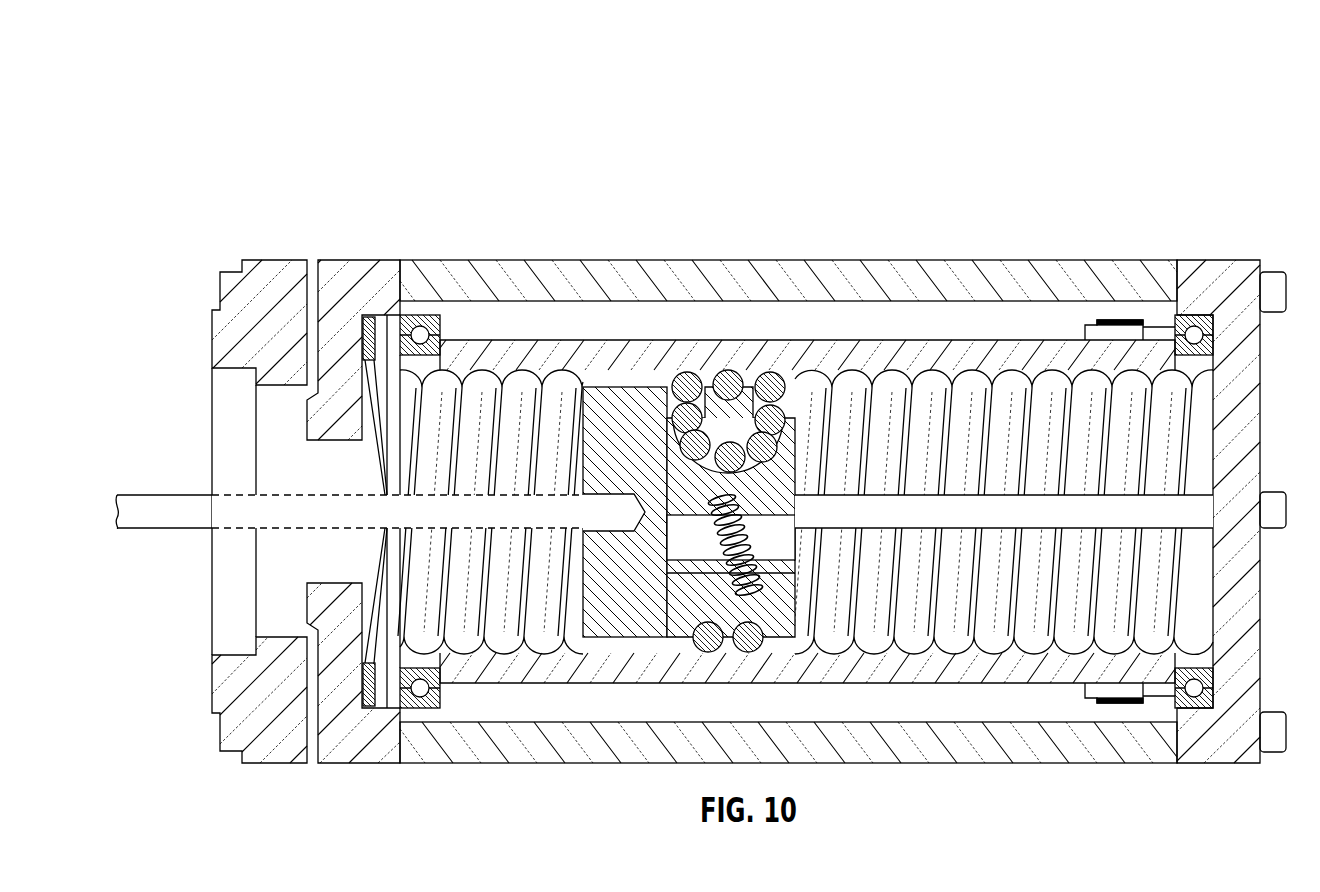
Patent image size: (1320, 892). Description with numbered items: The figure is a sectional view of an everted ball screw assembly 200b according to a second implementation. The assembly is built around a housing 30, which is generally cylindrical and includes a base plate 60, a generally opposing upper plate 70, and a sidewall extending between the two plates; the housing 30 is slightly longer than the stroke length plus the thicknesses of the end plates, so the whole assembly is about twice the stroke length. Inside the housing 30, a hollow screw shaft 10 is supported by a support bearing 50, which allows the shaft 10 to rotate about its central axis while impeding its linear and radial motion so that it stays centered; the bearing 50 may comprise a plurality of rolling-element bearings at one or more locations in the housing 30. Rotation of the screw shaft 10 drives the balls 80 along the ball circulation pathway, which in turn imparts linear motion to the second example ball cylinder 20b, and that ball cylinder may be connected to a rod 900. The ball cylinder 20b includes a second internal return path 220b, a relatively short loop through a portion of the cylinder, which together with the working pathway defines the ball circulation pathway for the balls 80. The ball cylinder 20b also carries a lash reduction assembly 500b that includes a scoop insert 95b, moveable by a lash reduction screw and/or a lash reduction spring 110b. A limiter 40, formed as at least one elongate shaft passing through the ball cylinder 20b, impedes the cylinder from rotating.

The everted ball screw assembly 200b is at (248, 78).
The upper plate 70 is at (278, 262).
The support bearing 50 is at (422, 316).
The hollow screw shaft 10 is at (588, 340).
The ball cylinder 20b is at (658, 385).
The balls 80 is at (686, 374).
The housing 30 is at (892, 262).
The limiter 40 is at (1097, 512).
The base plate 60 is at (1192, 262).
The internal return path 220b is at (784, 452).
The scoop insert 95b is at (782, 504).
The rod 900 is at (162, 494).
The lash reduction spring 110b is at (718, 590).
The lash reduction assembly 500b is at (759, 538).